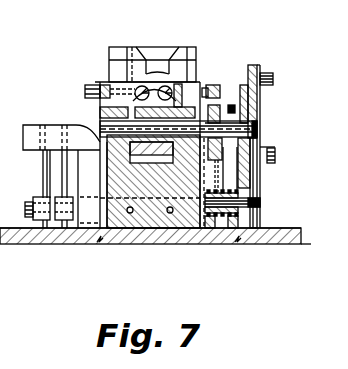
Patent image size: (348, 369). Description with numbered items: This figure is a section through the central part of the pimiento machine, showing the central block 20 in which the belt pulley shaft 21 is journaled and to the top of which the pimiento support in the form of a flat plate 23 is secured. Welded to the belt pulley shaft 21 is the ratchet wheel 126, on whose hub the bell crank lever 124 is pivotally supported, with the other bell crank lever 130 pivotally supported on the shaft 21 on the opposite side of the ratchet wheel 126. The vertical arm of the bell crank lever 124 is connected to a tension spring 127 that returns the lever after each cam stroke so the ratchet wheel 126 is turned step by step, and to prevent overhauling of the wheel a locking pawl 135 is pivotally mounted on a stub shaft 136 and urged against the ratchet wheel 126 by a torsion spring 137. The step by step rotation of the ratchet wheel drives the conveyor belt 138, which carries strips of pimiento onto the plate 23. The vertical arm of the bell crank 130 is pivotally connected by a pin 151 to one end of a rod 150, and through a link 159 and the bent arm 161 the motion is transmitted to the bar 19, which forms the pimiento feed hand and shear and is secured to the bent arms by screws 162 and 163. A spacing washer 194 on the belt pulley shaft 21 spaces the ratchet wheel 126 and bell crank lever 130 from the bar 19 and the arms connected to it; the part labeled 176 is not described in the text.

The bar 19 is at (100, 101).
The central block 20 is at (100, 116).
The belt pulley shaft 21 is at (100, 141).
The flat plate 23 is at (189, 90).
The bell crank lever 124 is at (260, 92).
The ratchet wheel 126 is at (275, 150).
The tension spring 127 is at (178, 62).
The bell crank lever 130 is at (258, 121).
The locking pawl 135 is at (260, 203).
The stub shaft 136 is at (210, 240).
The torsion spring 137 is at (199, 240).
The conveyor belt 138 is at (128, 90).
The rod 150 is at (230, 105).
The pin 151 is at (257, 110).
The link 159 is at (204, 88).
The bent arm 161 is at (110, 90).
The screw 162 is at (85, 90).
The screw 163 is at (259, 73).
The housing 176 is at (140, 85).
The spacing washer 194 is at (247, 162).